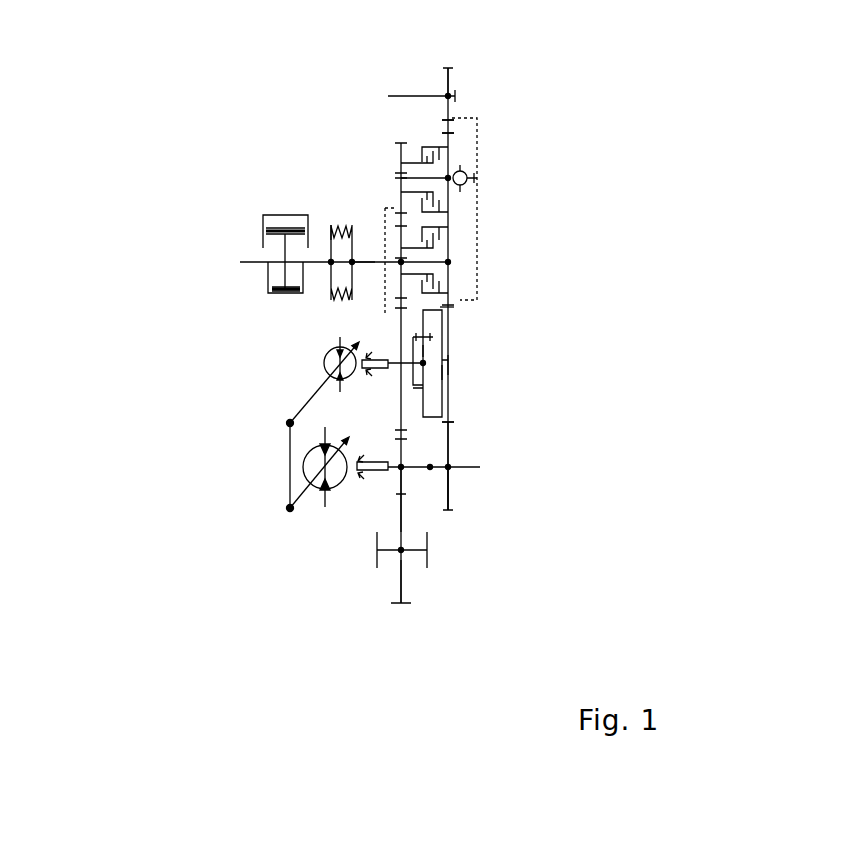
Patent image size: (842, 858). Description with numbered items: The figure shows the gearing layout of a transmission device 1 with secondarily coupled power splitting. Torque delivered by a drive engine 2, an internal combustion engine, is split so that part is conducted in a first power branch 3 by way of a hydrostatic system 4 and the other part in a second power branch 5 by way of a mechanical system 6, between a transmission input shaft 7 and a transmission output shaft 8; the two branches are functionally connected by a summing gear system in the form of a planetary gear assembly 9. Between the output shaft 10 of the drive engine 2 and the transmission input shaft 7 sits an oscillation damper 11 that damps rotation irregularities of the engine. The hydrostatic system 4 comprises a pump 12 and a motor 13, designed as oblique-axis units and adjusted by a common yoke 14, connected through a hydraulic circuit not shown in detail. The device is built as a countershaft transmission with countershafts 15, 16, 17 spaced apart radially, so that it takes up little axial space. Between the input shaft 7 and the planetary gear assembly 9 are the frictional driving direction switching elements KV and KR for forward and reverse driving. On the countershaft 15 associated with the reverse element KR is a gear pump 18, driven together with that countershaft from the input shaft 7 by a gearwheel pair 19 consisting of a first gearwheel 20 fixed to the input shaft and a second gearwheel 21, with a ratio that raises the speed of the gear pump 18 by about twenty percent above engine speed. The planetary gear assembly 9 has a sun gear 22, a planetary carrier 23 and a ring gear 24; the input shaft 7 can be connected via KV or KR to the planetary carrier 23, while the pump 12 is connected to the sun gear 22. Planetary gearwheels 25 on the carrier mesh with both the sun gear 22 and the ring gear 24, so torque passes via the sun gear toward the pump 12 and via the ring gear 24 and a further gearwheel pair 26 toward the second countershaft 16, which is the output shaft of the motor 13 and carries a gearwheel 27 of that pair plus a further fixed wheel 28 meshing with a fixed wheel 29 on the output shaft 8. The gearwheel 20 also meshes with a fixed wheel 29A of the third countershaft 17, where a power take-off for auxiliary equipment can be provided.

The transmission device 1 is at (500, 281).
The drive engine 2 is at (256, 215).
The first power branch 3 is at (258, 415).
The hydrostatic system 4 is at (307, 512).
The second power branch 5 is at (518, 439).
The mechanical system 6 is at (458, 363).
The transmission input shaft 7 is at (363, 260).
The transmission output shaft 8 is at (410, 553).
The planetary gear assembly 9 is at (424, 422).
The output shaft of the drive engine 10 is at (320, 260).
The oscillation damper 11 is at (340, 227).
The pump 12 is at (289, 382).
The motor 13 is at (278, 509).
The common yoke 14 is at (289, 451).
The countershaft 15 is at (398, 176).
The second countershaft 16 is at (478, 468).
The third countershaft 17 is at (391, 96).
The gear pump 18 is at (478, 166).
The gearwheel pair 19 is at (458, 220).
The first gearwheel 20 is at (456, 242).
The second gearwheel 21 is at (482, 130).
The sun gear 22 is at (426, 357).
The planetary carrier 23 is at (392, 318).
The ring gear 24 is at (455, 318).
The planetary gearwheels 25 is at (443, 372).
The further gearwheel pair 26 is at (465, 424).
The gearwheel 27 is at (448, 493).
The further fixed wheel 28 is at (397, 484).
The fixed wheel 29 is at (397, 578).
The fixed wheel of the third countershaft 29A is at (452, 80).
The driving direction switching element KV is at (427, 230).
The driving direction switching element KR is at (430, 147).